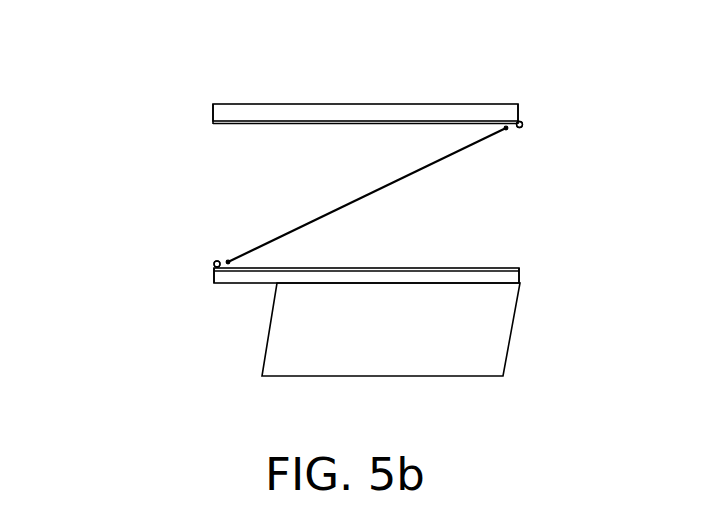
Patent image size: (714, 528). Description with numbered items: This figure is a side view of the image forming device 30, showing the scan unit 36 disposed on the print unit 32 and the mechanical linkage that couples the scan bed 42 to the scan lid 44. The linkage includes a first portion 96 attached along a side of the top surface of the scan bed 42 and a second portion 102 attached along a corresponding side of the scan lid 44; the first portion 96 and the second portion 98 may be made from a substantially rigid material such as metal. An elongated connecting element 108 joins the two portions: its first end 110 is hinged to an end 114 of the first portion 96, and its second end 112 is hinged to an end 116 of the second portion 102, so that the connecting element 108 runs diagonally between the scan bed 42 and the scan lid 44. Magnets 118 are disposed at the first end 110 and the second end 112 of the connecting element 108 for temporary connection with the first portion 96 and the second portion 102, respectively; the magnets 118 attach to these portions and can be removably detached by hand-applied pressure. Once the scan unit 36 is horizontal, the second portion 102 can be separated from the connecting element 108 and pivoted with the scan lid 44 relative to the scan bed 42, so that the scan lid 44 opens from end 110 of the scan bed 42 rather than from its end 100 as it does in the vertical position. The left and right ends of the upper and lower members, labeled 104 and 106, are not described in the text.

The image forming device 30 is at (133, 28).
The print unit 32 is at (347, 352).
The scan unit 36 is at (108, 180).
The scan bed 42 is at (435, 283).
The scan lid 44 is at (322, 104).
The first portion 96 is at (388, 268).
The second portion 98 is at (213, 269).
The end 100 is at (520, 268).
The second portion 102 is at (352, 124).
The left end of upper platform 104 is at (213, 122).
The upper pivot joint 106 is at (523, 121).
The connecting element 108 is at (415, 175).
The first end 110 is at (214, 262).
The second end 112 is at (522, 131).
The end 114 is at (217, 260).
The end 116 is at (524, 128).
The magnets 118 is at (518, 122).